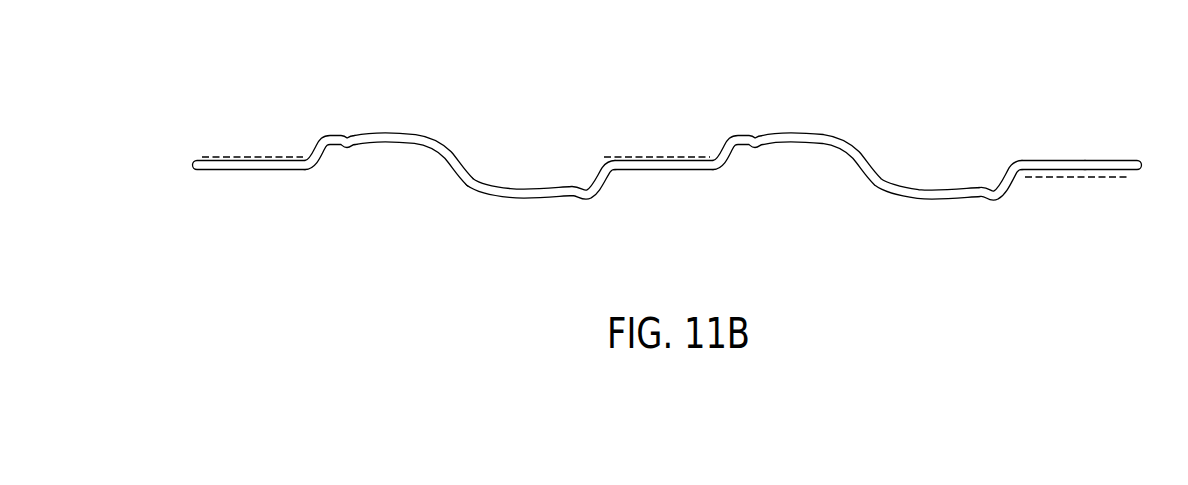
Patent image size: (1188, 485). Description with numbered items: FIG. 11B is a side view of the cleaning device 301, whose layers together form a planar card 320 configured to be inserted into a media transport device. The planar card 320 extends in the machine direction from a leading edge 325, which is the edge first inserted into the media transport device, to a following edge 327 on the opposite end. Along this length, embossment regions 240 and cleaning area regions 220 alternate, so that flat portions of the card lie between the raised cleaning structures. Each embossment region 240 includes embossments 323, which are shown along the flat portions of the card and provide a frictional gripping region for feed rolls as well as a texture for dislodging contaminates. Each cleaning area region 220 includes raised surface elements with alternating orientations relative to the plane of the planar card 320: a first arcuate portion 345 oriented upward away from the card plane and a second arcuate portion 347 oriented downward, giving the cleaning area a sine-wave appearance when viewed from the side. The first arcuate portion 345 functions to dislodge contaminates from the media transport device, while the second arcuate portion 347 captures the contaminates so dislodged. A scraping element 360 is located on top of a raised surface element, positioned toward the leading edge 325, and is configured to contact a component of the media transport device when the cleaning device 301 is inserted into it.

The cleaning device 301 is at (681, 162).
The cleaning area region 220 is at (688, 197).
The embossment region 240 is at (681, 197).
The planar card 320 is at (1028, 160).
The embossment 323 is at (262, 155).
The leading edge 325 is at (203, 159).
The following edge 327 is at (1139, 160).
The first arcuate portion 345 is at (418, 134).
The second arcuate portion 347 is at (535, 186).
The scraping element 360 is at (330, 135).